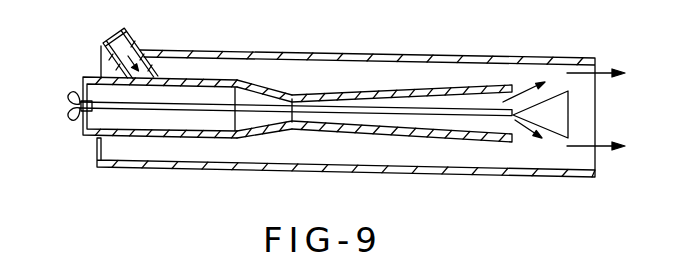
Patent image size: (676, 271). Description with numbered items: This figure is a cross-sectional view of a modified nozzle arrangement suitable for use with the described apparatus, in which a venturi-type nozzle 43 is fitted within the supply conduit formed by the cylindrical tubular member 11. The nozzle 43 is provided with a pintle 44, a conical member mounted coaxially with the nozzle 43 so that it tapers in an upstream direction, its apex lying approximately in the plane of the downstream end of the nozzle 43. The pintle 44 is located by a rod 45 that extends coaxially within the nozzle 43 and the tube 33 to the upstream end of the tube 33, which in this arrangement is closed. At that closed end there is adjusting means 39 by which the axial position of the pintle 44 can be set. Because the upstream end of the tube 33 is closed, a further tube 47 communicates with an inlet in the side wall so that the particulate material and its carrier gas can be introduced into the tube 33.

The cylindrical tubular member 11 is at (492, 178).
The tube 33 is at (143, 137).
The adjusting means 39 is at (72, 124).
The venturi-type nozzle 43 is at (289, 143).
The pintle 44 is at (568, 116).
The rod 45 is at (450, 111).
The tube 47 is at (132, 33).